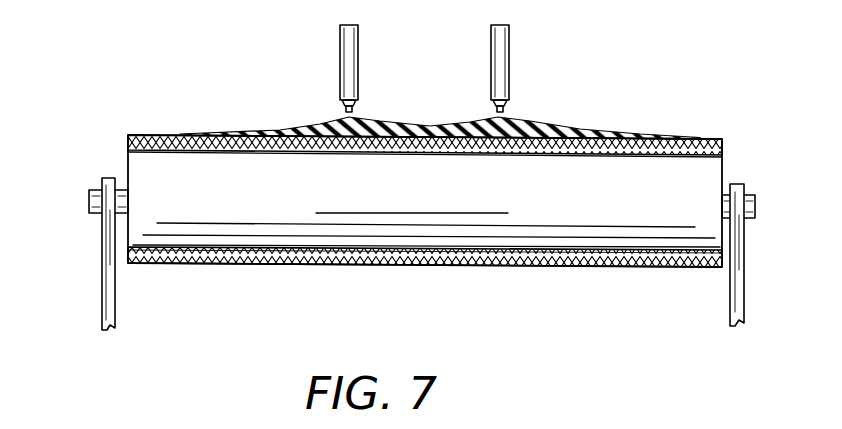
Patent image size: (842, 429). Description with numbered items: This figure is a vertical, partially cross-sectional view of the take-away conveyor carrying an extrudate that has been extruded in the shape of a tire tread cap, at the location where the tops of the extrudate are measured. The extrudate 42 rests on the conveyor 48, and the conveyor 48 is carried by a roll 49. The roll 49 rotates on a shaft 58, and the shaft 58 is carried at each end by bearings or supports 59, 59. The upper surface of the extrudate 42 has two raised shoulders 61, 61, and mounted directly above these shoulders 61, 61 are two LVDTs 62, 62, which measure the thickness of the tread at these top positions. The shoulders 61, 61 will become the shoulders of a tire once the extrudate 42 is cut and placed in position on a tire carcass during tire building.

The extrudate 42 is at (575, 131).
The conveyor 48 is at (128, 139).
The roll 49 is at (343, 217).
The shaft 58 is at (92, 198).
The bearings or supports 59 is at (100, 268).
The shoulders 61 is at (350, 118).
The LVDTs 62 is at (350, 68).